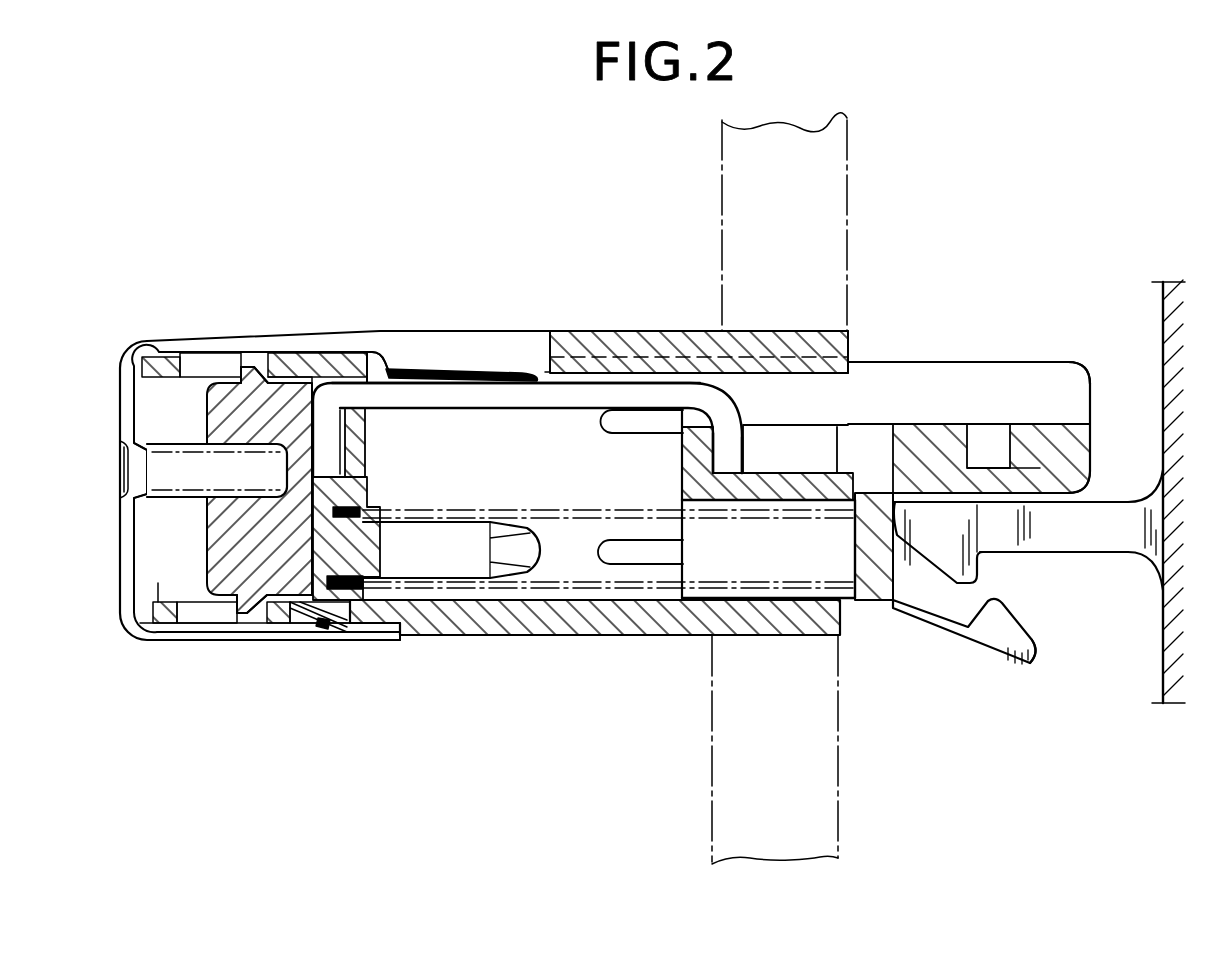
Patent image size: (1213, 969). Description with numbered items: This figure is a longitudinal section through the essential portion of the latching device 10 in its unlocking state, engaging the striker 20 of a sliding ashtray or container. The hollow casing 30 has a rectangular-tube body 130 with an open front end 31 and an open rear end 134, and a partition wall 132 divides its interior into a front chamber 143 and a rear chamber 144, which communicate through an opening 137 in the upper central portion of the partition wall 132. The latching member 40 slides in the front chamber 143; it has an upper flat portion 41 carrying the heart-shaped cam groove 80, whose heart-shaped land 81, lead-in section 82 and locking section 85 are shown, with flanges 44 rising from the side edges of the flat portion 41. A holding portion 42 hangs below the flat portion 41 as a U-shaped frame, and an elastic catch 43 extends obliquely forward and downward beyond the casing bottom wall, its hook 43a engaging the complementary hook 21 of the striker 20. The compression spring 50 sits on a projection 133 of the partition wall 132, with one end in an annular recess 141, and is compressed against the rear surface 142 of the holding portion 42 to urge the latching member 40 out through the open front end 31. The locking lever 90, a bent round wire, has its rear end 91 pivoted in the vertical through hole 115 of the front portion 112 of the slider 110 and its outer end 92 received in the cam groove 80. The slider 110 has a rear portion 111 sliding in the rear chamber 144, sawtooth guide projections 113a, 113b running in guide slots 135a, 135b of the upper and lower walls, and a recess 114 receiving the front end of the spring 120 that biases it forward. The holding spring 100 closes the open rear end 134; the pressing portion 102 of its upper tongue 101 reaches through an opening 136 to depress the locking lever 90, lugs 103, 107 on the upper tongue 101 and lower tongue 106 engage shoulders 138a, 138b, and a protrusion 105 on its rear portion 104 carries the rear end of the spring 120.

The latching device 10 is at (152, 256).
The striker 20 is at (1116, 510).
The hook 21 is at (976, 569).
The hollow casing 30 is at (660, 350).
The open front end 31 is at (850, 362).
The latching member 40 is at (900, 372).
The upper flat portion 41 is at (1062, 440).
The holding portion 42 is at (873, 598).
The elastic catch 43 is at (946, 618).
The hook 43a is at (1031, 662).
The flanges 44 is at (1045, 372).
The compression spring 50 is at (665, 602).
The heart-shaped cam groove 80 is at (815, 438).
The heart-shaped land 81 is at (937, 440).
The lead-in section 82 is at (756, 432).
The locking section 85 is at (990, 440).
The locking lever 90 is at (598, 382).
The rear end 91 is at (352, 430).
The outer end 92 is at (718, 450).
The holding spring 100 is at (134, 375).
The upper tongue 101 is at (376, 350).
The pressing portion 102 is at (456, 372).
The lug 103 is at (284, 352).
The rear portion 104 is at (124, 542).
The protrusion 105 is at (136, 470).
The lower tongue 106 is at (397, 642).
The lug 107 is at (316, 608).
The slider 110 is at (388, 282).
The rear portion 111 is at (311, 382).
The front portion 112 is at (350, 392).
The guide projection 113a is at (243, 372).
The guide projection 113b is at (243, 614).
The recess 114 is at (195, 440).
The vertical through hole 115 is at (367, 455).
The spring 120 is at (165, 490).
The body 130 is at (542, 602).
The partition wall 132 is at (345, 630).
The projection 133 is at (470, 586).
The open rear end 134 is at (160, 588).
The guide slot 135a is at (187, 360).
The guide slot 135b is at (207, 615).
The opening 136 is at (527, 345).
The opening 137 is at (355, 477).
The shoulder 138a is at (263, 352).
The shoulder 138b is at (278, 612).
The annular recess 141 is at (460, 556).
The rear surface 142 is at (855, 548).
The front chamber 143 is at (638, 596).
The rear chamber 144 is at (156, 642).